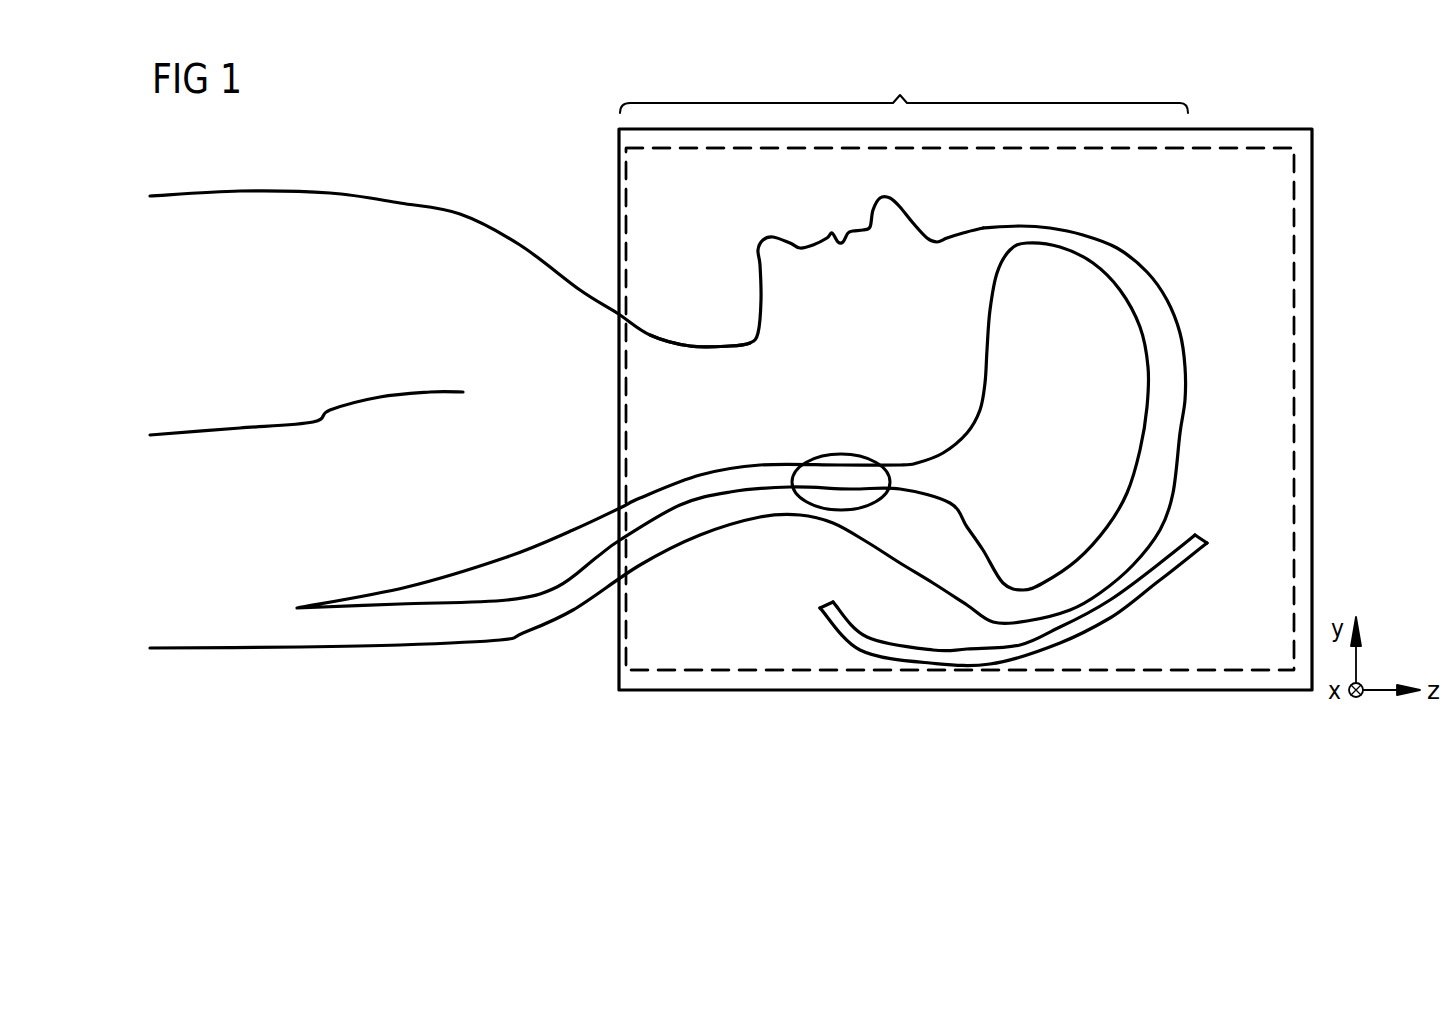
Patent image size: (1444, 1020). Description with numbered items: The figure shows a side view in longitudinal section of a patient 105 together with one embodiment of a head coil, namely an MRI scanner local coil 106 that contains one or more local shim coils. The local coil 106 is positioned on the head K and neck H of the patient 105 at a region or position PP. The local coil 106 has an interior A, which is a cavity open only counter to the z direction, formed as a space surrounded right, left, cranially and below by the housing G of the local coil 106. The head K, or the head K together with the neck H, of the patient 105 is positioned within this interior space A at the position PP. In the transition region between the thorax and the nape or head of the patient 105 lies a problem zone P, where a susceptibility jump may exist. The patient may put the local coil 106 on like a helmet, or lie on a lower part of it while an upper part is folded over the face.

The patient 105 is at (350, 193).
The local coil 106 is at (617, 200).
The neck H is at (693, 388).
The head K is at (1155, 275).
The problem zone P is at (838, 452).
The housing G is at (1302, 290).
The interior A is at (1296, 413).
The position PP is at (904, 83).